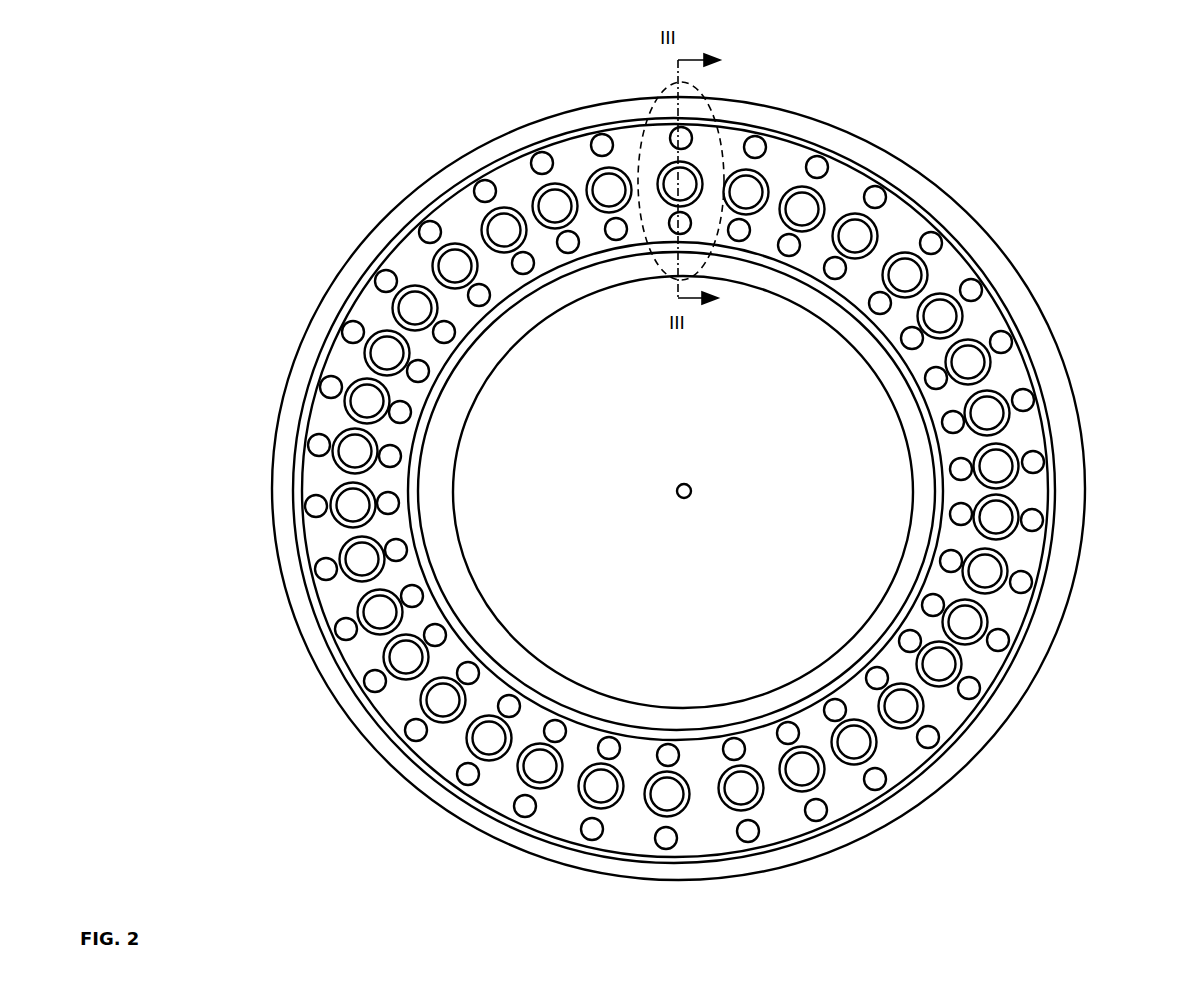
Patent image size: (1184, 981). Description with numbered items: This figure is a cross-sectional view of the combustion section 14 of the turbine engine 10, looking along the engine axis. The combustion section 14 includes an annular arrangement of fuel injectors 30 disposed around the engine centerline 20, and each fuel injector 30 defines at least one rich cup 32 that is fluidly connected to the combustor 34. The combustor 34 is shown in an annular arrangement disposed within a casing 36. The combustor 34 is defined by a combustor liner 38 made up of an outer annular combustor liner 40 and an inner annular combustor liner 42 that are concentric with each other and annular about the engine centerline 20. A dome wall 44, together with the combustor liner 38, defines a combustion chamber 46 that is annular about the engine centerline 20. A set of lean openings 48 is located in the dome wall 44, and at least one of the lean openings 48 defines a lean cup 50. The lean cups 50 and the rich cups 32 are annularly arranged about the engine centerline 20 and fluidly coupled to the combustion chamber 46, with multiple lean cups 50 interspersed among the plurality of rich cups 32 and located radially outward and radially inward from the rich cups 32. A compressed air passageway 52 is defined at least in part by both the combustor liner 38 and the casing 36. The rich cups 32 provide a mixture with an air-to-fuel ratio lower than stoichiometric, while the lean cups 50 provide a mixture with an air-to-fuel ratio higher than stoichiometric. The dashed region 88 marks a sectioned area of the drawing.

The turbine engine 10 is at (815, 82).
The combustion section 14 is at (244, 103).
The engine centerline 20 is at (677, 497).
The fuel injectors 30 is at (996, 517).
The rich cup 32 is at (677, 795).
The combustor 34 is at (1012, 392).
The casing 36 is at (908, 162).
The combustor liner 38 is at (1056, 437).
The outer annular combustor liner 40 is at (1048, 575).
The inner annular combustor liner 42 is at (860, 303).
The dome wall 44 is at (343, 368).
The combustion chamber 46 is at (410, 252).
The set of lean openings 48 is at (606, 143).
The lean cup 50 is at (759, 147).
The compressed air passageway 52 is at (874, 347).
The section region 88 is at (650, 113).